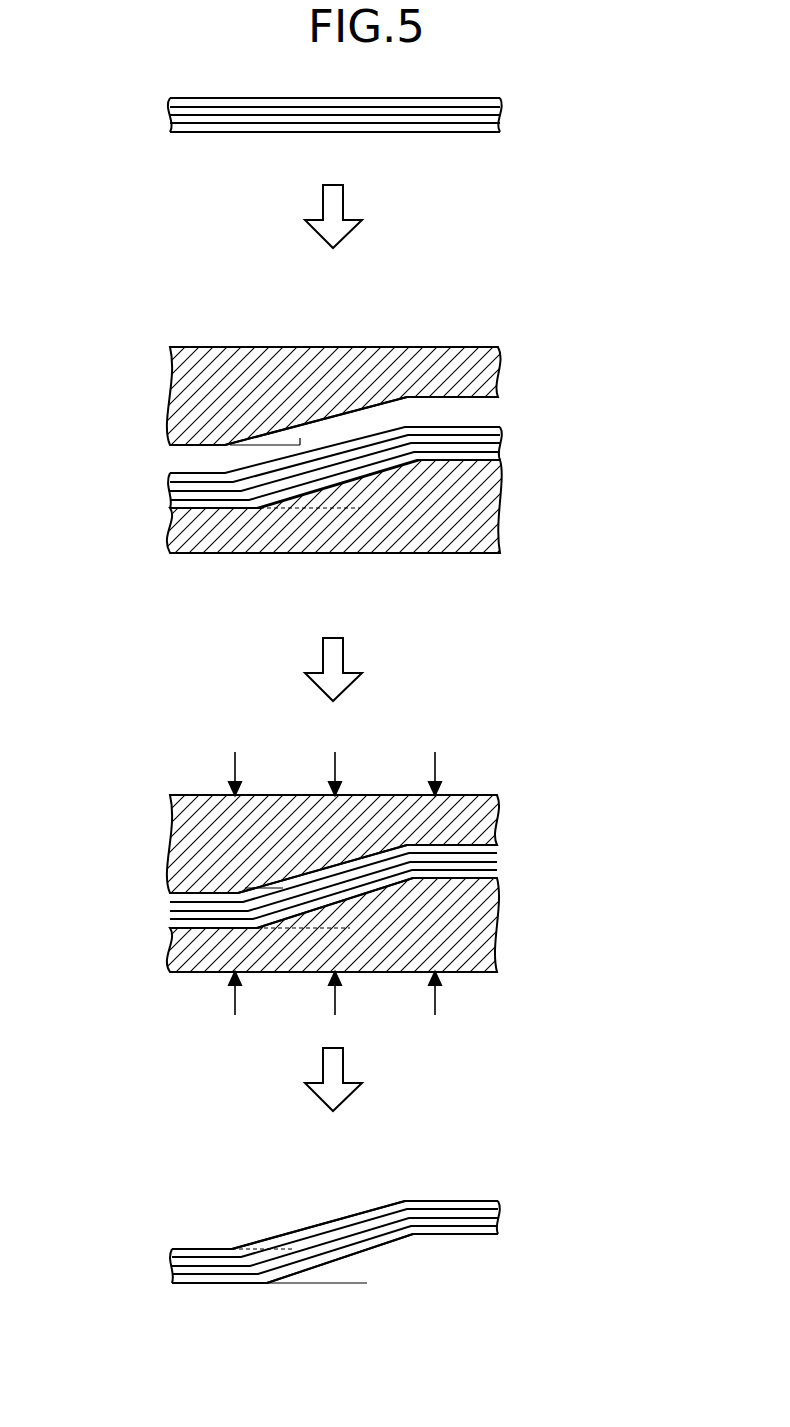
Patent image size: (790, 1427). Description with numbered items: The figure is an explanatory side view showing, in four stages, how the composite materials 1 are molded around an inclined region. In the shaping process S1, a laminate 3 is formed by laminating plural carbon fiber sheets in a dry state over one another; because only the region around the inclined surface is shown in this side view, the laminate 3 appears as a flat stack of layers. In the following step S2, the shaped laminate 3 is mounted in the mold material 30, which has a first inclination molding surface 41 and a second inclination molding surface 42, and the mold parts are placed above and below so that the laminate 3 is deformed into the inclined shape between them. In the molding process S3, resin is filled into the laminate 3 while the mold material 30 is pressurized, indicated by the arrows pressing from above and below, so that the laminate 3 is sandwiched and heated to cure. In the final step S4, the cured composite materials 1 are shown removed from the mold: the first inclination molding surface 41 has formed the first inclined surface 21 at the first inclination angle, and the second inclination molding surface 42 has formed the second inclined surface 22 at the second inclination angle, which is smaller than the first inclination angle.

The composite materials 1 is at (165, 1267).
The laminate 3 is at (165, 116).
The first inclined surface 21 is at (395, 1244).
The second inclined surface 22 is at (373, 1203).
The mold material 30 is at (462, 346).
The first inclination molding surface 41 is at (380, 462).
The second inclination molding surface 42 is at (358, 415).
The shaping process S1 is at (368, 115).
The mounting step S2 is at (402, 448).
The molding process S3 is at (561, 803).
The cured product step S4 is at (368, 1225).